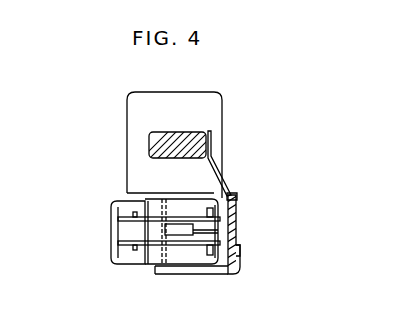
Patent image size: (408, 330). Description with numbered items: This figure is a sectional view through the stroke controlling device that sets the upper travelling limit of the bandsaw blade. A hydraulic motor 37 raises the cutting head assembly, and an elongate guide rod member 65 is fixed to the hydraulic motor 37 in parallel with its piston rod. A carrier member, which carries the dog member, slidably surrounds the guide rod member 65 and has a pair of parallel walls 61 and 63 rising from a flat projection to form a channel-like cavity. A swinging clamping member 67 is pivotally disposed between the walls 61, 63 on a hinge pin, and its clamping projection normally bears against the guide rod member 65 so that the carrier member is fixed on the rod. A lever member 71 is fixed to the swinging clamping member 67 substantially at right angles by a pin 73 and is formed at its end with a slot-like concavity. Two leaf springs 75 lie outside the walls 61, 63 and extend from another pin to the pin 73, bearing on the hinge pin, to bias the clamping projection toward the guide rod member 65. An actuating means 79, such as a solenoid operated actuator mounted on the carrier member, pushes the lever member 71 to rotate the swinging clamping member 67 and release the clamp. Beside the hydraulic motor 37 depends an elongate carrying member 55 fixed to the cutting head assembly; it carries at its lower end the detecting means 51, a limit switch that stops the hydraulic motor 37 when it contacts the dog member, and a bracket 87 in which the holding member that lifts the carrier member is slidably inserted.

The hydraulic motor 37 is at (207, 98).
The detecting means 51 is at (193, 271).
The elongate carrying member 55 is at (236, 203).
The wall 61 is at (185, 218).
The wall 63 is at (180, 236).
The guide rod member 65 is at (166, 232).
The swinging clamping member 67 is at (218, 235).
The lever member 71 is at (118, 242).
The pin 73 is at (235, 200).
The leaf springs 75 is at (213, 212).
The actuating means 79 is at (103, 257).
The bracket 87 is at (239, 250).